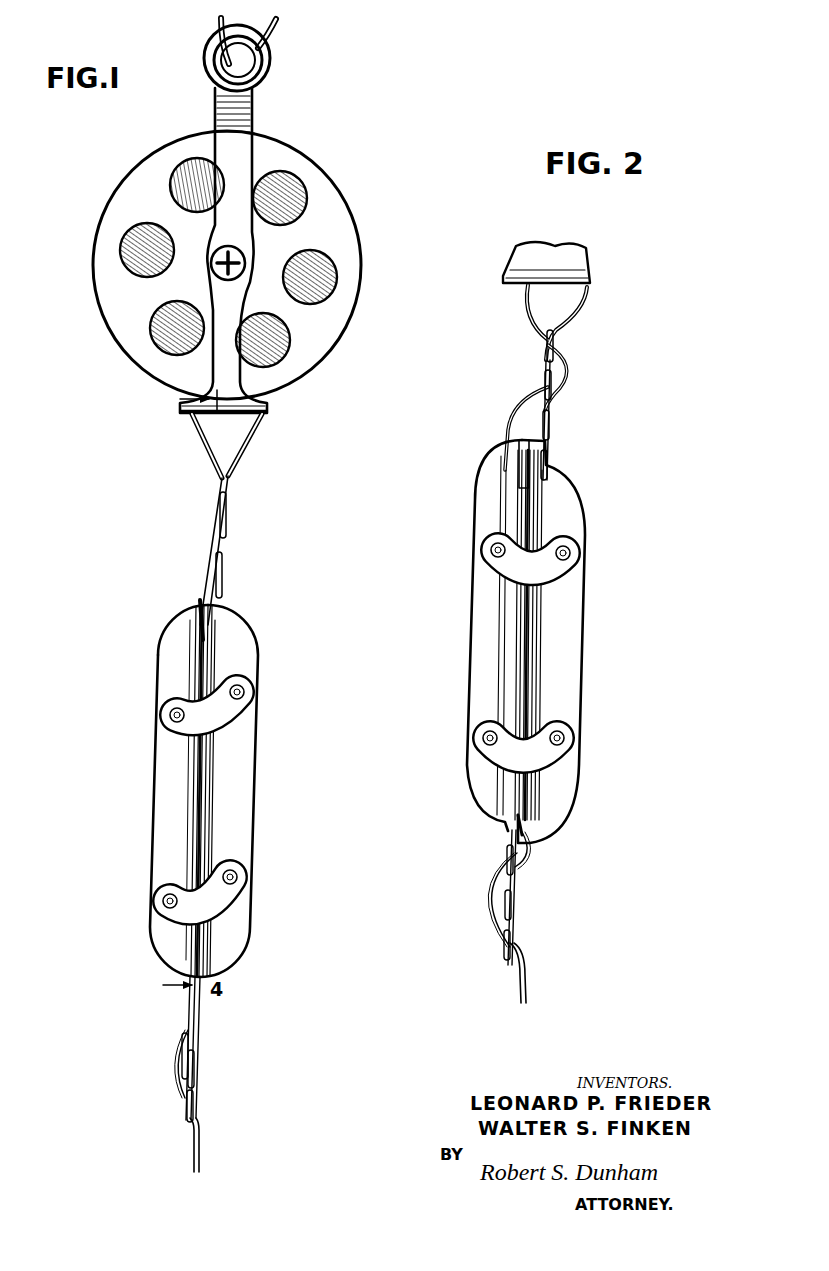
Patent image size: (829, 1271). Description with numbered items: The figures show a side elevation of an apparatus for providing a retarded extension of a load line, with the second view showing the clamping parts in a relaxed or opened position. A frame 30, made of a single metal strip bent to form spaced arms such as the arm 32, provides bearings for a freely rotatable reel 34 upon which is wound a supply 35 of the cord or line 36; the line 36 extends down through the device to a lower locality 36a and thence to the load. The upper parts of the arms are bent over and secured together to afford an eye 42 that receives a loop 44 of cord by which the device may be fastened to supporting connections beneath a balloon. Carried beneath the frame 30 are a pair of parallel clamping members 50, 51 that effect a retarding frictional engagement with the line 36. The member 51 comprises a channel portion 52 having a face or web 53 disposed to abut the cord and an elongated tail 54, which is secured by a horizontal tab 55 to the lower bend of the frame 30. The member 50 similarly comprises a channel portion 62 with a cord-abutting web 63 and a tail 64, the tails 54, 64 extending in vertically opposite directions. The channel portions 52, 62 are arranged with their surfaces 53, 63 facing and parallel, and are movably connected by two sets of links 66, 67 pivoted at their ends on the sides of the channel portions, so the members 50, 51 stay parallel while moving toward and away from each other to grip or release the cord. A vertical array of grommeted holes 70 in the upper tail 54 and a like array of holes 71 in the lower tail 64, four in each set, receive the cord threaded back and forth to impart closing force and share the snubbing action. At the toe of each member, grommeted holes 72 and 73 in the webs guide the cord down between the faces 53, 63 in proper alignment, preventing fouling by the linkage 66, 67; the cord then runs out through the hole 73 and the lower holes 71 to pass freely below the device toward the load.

In FIG. 1, the frame 30 is at (268, 124).
In FIG. 1, the arm 32 is at (227, 150).
In FIG. 1, the reel 34 is at (252, 265).
In FIG. 1, the supply 35 is at (323, 271).
In FIG. 1, the cord or line 36 is at (210, 450).
In FIG. 1, the lower locality 36a is at (190, 1149).
In FIG. 1, the eye 42 is at (250, 69).
In FIG. 1, the loop 44 is at (277, 30).
In FIG. 1, the clamping member 50 is at (203, 791).
In FIG. 2, the clamping member 50 is at (524, 641).
In FIG. 1, the clamping member 51 is at (212, 791).
In FIG. 2, the clamping member 51 is at (539, 641).
In FIG. 1, the channel portion 52 is at (242, 755).
In FIG. 2, the channel portion 52 is at (568, 629).
In FIG. 1, the face or web 53 is at (203, 830).
In FIG. 2, the face or web 53 is at (532, 655).
In FIG. 1, the tail or extension 54 is at (248, 447).
In FIG. 2, the tail or extension 54 is at (546, 404).
In FIG. 1, the horizontal tab 55 is at (175, 412).
In FIG. 1, the channel portion 62 is at (163, 779).
In FIG. 2, the channel portion 62 is at (478, 652).
In FIG. 1, the face or web 63 is at (182, 823).
In FIG. 1, the tail or extended portion 64 is at (187, 1008).
In FIG. 1, the links 66 is at (230, 710).
In FIG. 2, the links 66 is at (551, 572).
In FIG. 1, the links 67 is at (217, 900).
In FIG. 2, the links 67 is at (547, 757).
In FIG. 1, the holes 70 is at (224, 563).
In FIG. 2, the holes 70 is at (558, 338).
In FIG. 1, the holes 71 is at (195, 1067).
In FIG. 2, the holes 71 is at (508, 860).
In FIG. 1, the grommeted hole 72 is at (205, 625).
In FIG. 2, the grommeted hole 72 is at (528, 447).
In FIG. 2, the grommeted hole 73 is at (522, 820).